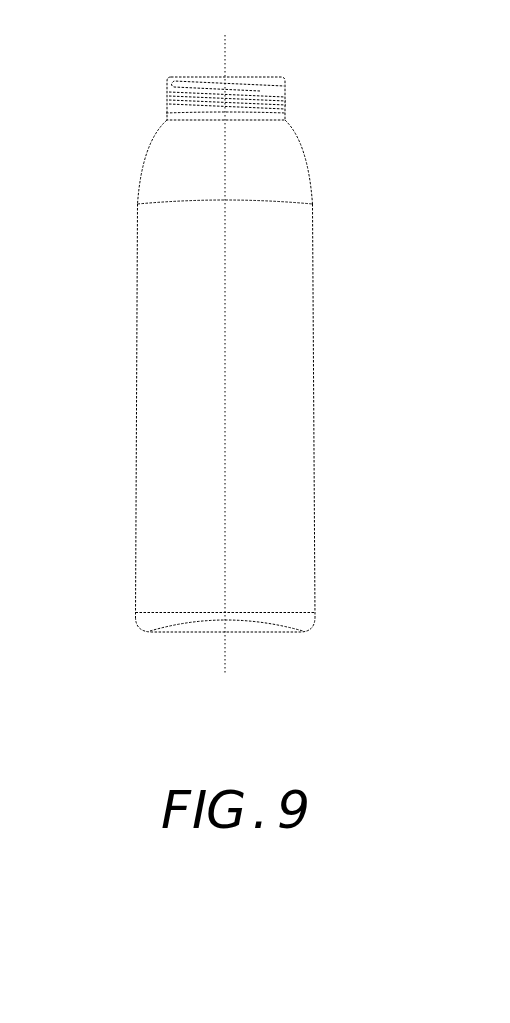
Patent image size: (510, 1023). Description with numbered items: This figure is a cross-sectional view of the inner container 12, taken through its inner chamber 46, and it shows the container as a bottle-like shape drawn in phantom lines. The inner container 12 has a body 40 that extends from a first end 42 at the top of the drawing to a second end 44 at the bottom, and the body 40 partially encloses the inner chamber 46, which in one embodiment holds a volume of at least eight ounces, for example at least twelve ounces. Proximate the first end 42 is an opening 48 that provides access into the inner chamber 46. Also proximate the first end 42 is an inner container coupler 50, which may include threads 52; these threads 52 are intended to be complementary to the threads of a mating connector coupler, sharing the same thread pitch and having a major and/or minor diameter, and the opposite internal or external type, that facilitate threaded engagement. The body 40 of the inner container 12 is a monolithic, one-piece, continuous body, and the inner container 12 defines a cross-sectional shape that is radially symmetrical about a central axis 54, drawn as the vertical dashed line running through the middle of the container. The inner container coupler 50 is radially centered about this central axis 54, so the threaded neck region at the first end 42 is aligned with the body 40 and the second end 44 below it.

The inner container 12 is at (97, 349).
The body 40 is at (141, 173).
The first end 42 is at (167, 78).
The second end 44 is at (152, 633).
The inner chamber 46 is at (152, 407).
The opening 48 is at (196, 82).
The inner container coupler 50 is at (287, 93).
The threads 52 is at (287, 105).
The central axis 54 is at (226, 52).